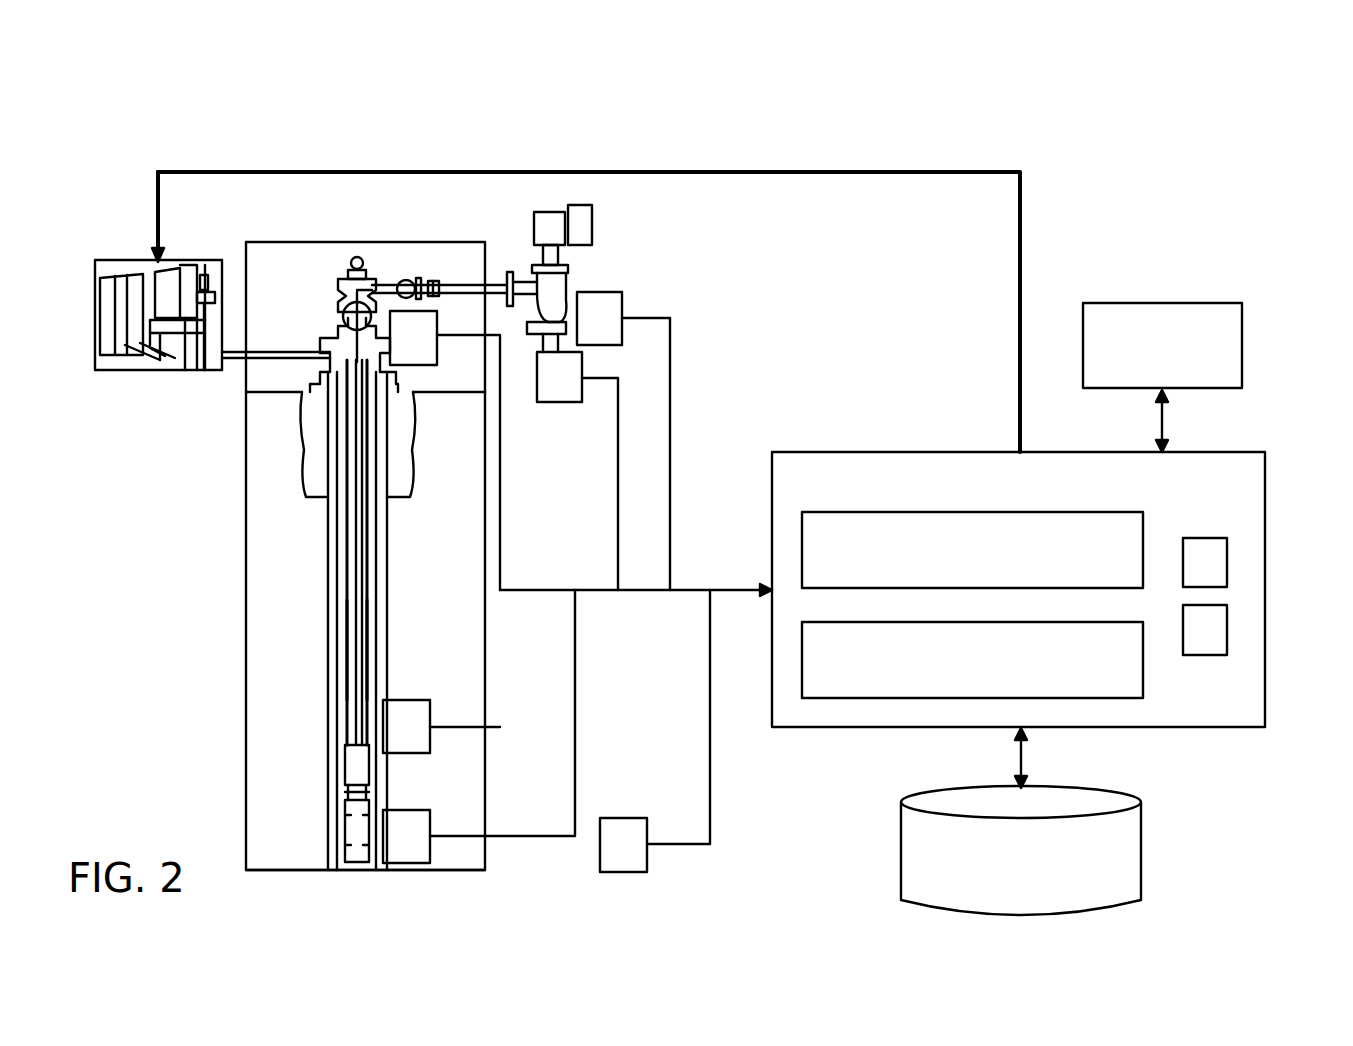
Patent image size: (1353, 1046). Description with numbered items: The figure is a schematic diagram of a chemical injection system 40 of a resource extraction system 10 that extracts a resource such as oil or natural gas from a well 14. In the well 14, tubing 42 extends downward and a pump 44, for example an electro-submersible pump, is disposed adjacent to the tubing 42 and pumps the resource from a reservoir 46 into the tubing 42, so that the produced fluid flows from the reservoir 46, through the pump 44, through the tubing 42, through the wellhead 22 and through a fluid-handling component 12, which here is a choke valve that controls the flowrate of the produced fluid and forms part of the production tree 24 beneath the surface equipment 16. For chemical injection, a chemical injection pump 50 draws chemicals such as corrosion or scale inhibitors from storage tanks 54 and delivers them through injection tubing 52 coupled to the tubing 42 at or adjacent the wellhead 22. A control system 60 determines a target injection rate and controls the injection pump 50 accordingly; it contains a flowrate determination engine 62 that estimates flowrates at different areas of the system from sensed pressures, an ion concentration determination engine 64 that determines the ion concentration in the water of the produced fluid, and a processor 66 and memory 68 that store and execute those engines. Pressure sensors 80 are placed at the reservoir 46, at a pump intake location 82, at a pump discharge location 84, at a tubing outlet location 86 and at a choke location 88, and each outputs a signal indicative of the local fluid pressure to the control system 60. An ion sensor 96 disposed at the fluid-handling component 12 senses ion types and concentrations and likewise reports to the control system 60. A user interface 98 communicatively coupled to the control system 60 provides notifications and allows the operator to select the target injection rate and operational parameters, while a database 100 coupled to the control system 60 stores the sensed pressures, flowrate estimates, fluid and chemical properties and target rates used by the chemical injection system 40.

The resource extraction system 10 is at (281, 108).
The fluid-handling component 12 is at (518, 248).
The well 14 is at (286, 574).
The surface equipment 16 is at (203, 149).
The wellhead 22 is at (338, 266).
The production tree 24 is at (640, 240).
The chemical injection system 40 is at (928, 150).
The tubing 42 is at (352, 636).
The pump 44 is at (352, 836).
The reservoir 46 is at (503, 912).
The chemical injection pump 50 is at (190, 262).
The injection tubing 52 is at (280, 392).
The storage tanks 54 is at (135, 276).
The control system 60 is at (1265, 470).
The flowrate determination engine 62 is at (1143, 528).
The ion concentration determination engine 64 is at (1143, 682).
The processor 66 is at (1227, 563).
The memory 68 is at (1227, 632).
The pressure sensors 80 is at (436, 365).
The pump intake location 82 is at (382, 876).
The pump discharge location 84 is at (390, 686).
The tubing outlet location 86 is at (383, 322).
The choke location 88 is at (525, 352).
The ion sensor 96 is at (605, 292).
The user interface 98 is at (1242, 345).
The database 100 is at (1141, 848).